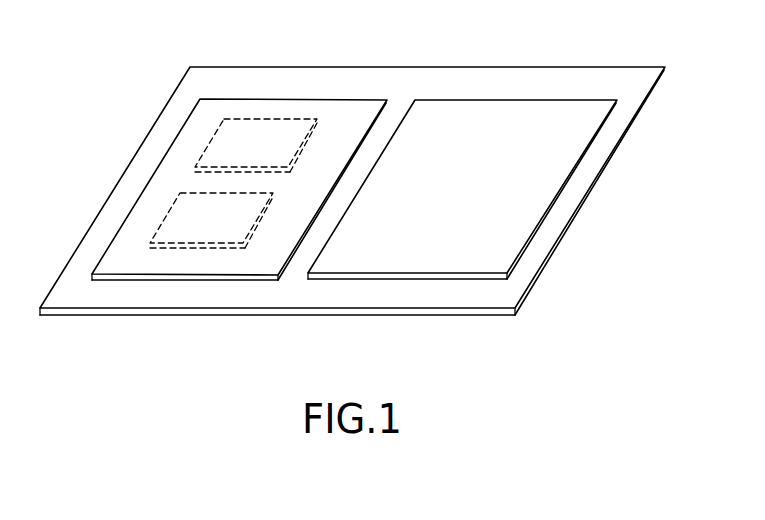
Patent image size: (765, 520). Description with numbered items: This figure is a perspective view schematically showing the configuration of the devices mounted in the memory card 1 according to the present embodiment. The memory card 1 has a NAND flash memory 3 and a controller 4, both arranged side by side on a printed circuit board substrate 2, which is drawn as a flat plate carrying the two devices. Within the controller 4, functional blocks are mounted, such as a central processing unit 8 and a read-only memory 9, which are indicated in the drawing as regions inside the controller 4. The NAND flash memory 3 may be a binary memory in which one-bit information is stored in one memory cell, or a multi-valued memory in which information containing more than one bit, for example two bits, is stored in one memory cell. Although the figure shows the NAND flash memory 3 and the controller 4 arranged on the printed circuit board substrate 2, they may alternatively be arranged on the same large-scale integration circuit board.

The memory card 1 is at (611, 245).
The printed circuit board substrate 2 is at (598, 80).
The NAND flash memory 3 is at (467, 263).
The controller 4 is at (212, 262).
The central processing unit 8 is at (172, 212).
The read-only memory 9 is at (216, 135).